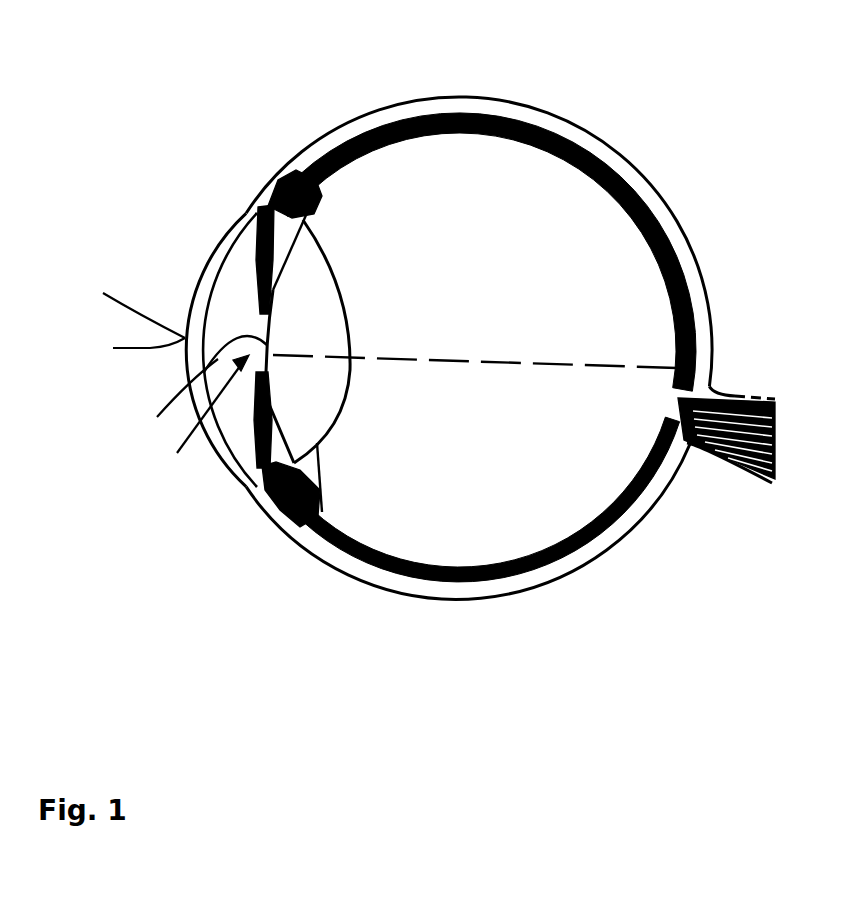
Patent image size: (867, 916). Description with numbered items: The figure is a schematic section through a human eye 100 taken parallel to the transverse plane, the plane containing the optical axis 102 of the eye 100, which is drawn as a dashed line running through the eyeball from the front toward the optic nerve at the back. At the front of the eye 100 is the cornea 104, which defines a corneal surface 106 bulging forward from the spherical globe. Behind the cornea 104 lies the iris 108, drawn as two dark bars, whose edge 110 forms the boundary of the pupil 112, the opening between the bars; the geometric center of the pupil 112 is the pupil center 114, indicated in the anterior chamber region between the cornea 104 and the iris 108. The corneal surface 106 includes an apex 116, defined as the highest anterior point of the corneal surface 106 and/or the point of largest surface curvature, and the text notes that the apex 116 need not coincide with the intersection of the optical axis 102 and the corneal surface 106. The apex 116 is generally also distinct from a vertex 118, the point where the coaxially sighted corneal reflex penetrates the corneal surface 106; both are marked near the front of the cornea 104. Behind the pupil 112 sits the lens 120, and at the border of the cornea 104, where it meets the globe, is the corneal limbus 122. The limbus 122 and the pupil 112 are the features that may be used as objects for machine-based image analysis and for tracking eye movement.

The eye 100 is at (238, 36).
The optical axis 102 is at (650, 367).
The cornea 104 is at (230, 447).
The corneal surface 106 is at (218, 442).
The iris 108 is at (257, 243).
The edge 110 is at (253, 307).
The pupil 112 is at (187, 416).
The pupil center 114 is at (156, 394).
The apex 116 is at (109, 305).
The vertex 118 is at (115, 347).
The lens 120 is at (327, 282).
The corneal limbus 122 is at (250, 210).